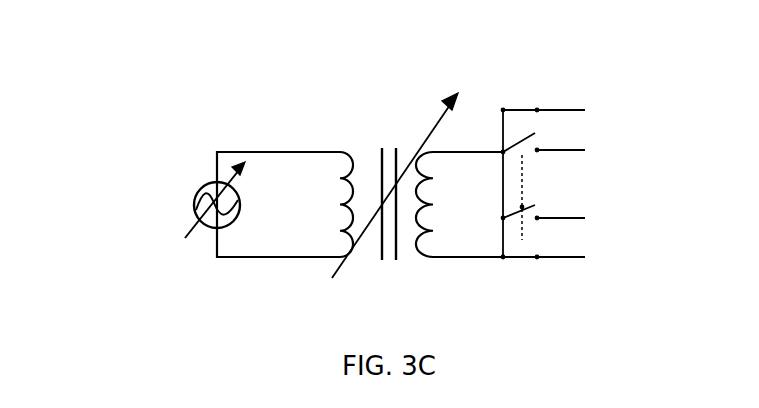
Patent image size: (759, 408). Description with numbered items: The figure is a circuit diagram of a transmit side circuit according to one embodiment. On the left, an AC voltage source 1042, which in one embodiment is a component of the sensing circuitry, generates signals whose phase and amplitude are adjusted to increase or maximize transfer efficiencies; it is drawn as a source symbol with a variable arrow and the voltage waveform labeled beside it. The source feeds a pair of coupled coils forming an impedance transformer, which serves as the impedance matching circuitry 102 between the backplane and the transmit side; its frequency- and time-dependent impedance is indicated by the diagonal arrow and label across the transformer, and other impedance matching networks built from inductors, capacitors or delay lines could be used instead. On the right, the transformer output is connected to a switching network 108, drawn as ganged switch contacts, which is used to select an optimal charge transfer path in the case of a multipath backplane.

The AC voltage source 1042 is at (195, 213).
The impedance matching circuitry 102 is at (433, 85).
The switching network 108 is at (608, 182).